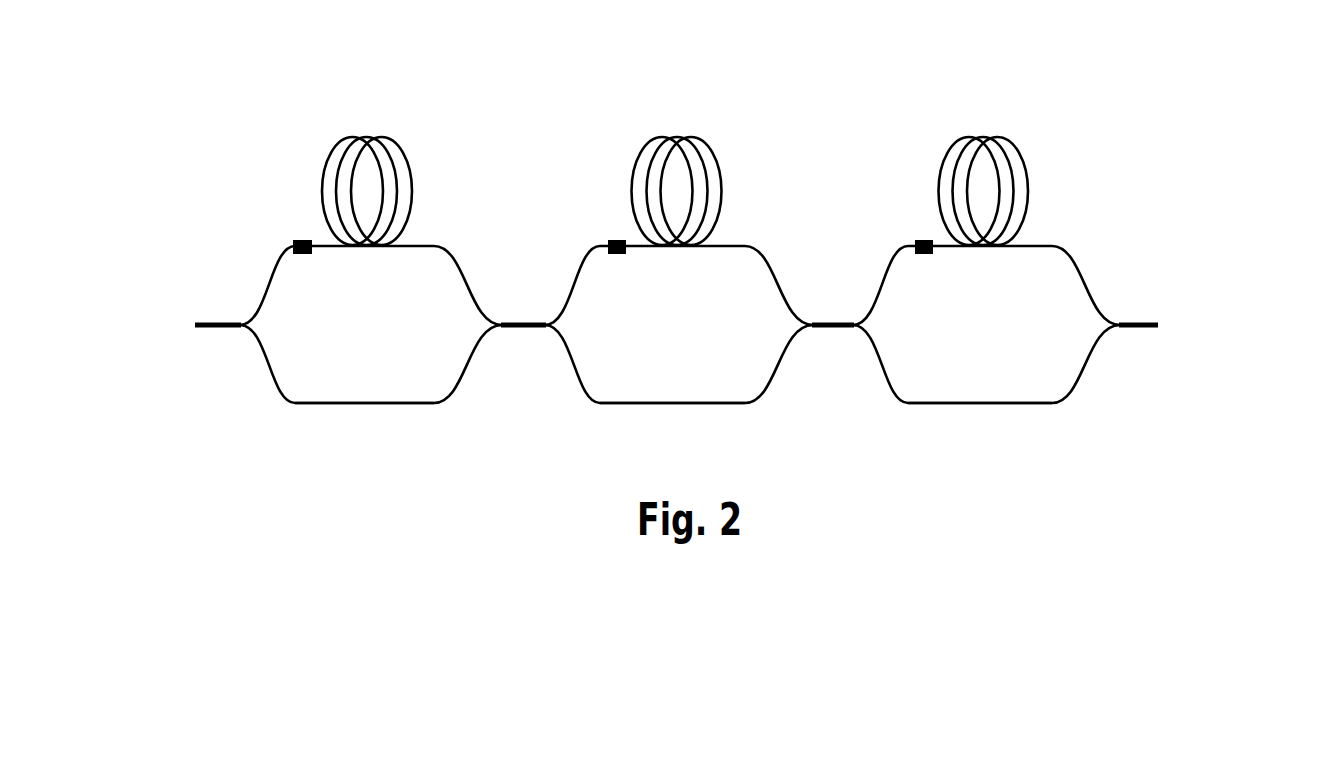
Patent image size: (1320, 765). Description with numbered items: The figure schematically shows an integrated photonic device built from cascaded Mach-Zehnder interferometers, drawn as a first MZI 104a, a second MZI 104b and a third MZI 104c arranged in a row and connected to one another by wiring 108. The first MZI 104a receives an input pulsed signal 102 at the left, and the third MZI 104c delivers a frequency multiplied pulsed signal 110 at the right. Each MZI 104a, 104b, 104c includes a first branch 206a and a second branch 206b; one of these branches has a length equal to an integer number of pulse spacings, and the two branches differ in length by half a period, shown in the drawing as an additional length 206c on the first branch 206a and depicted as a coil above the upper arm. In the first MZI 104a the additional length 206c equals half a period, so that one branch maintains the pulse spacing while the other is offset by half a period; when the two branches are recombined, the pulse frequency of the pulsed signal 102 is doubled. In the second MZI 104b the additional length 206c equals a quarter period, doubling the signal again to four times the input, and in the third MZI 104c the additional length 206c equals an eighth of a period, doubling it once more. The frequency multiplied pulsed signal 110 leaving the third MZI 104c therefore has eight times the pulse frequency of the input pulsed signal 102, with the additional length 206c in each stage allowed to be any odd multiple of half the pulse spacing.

The pulsed signal 102 is at (215, 331).
The first MZI 104a is at (252, 168).
The second MZI 104b is at (575, 183).
The third MZI 104c is at (885, 182).
The wiring 108 is at (518, 321).
The frequency multiplied pulsed signal 110 is at (1150, 333).
The first branch 206a is at (283, 258).
The second branch 206b is at (276, 388).
The additional length 206c is at (335, 148).